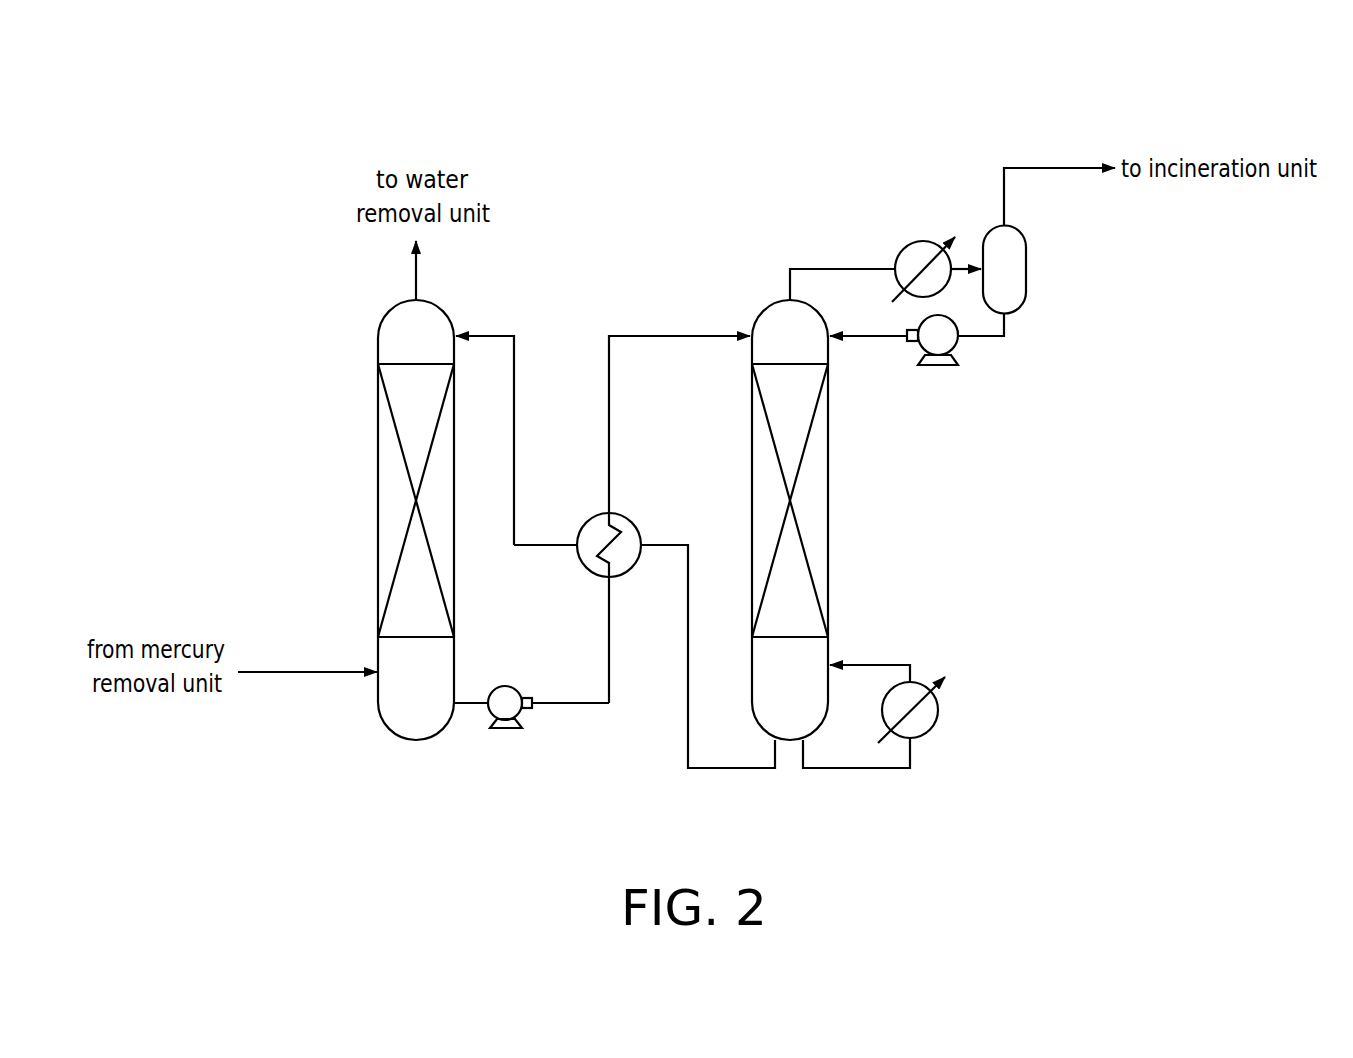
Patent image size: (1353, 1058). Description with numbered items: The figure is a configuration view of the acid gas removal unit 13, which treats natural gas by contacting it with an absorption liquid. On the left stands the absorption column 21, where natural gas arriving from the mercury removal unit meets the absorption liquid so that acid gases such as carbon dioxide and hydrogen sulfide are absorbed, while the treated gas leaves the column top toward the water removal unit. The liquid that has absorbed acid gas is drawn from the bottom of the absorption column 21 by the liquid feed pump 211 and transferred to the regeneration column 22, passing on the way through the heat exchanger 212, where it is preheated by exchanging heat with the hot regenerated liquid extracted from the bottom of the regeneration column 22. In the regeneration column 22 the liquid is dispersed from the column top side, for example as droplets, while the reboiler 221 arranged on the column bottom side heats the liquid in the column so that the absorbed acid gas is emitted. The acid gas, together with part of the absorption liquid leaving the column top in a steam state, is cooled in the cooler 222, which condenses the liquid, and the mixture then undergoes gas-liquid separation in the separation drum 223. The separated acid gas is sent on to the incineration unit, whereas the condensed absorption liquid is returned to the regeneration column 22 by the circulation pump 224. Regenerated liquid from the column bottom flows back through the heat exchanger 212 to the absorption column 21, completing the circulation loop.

The acid gas removal unit 13 is at (968, 88).
The absorption column 21 is at (436, 308).
The liquid feed pump 211 is at (503, 729).
The heat exchanger 212 is at (627, 518).
The regeneration column 22 is at (763, 310).
The reboiler 221 is at (940, 708).
The cooler 222 is at (925, 242).
The separation drum 223 is at (1027, 268).
The circulation pump 224 is at (938, 366).